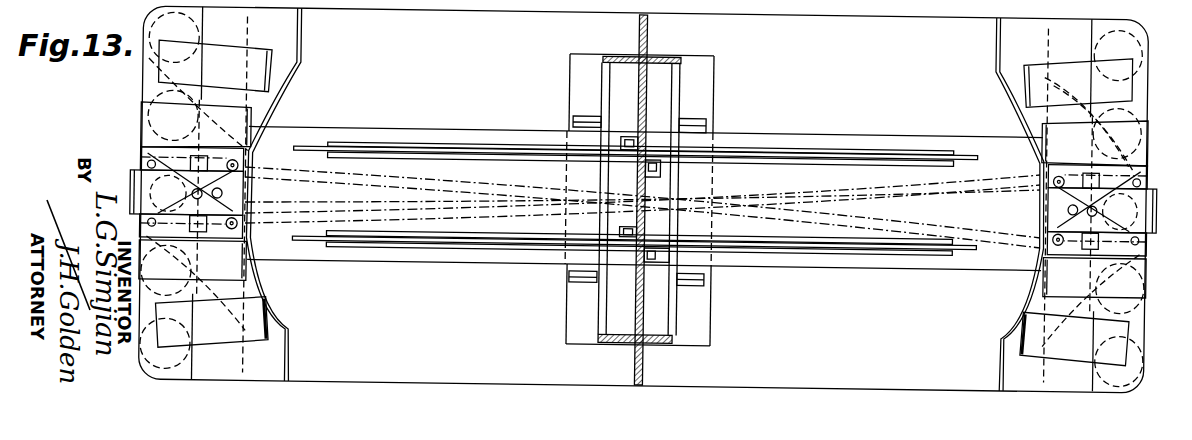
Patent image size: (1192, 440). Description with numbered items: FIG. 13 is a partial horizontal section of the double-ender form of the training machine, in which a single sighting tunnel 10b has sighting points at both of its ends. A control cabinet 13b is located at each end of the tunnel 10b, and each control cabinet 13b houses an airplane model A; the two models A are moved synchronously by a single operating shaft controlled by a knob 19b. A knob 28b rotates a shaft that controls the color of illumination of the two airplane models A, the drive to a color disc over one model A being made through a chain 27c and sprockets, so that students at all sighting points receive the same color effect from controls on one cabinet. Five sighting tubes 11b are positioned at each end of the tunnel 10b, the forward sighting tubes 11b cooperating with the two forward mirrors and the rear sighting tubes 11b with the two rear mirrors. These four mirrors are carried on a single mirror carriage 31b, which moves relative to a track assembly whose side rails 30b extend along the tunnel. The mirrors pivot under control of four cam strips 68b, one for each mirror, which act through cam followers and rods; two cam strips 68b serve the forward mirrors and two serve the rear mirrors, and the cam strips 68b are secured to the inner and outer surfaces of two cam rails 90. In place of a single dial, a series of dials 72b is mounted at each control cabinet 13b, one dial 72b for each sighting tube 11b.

The sighting tunnel 10b is at (373, 387).
The control cabinet 13b is at (148, 380).
The sighting tube 11b is at (142, 118).
The dial 72b is at (152, 70).
The knob 19b is at (247, 168).
The knob 28b is at (249, 233).
The chain 27c is at (642, 207).
The airplane model A is at (1043, 211).
The mirror carriage 31b is at (716, 82).
The cam rail 90 is at (495, 240).
The side rail 30b is at (405, 269).
The cam strip 68b is at (814, 158).